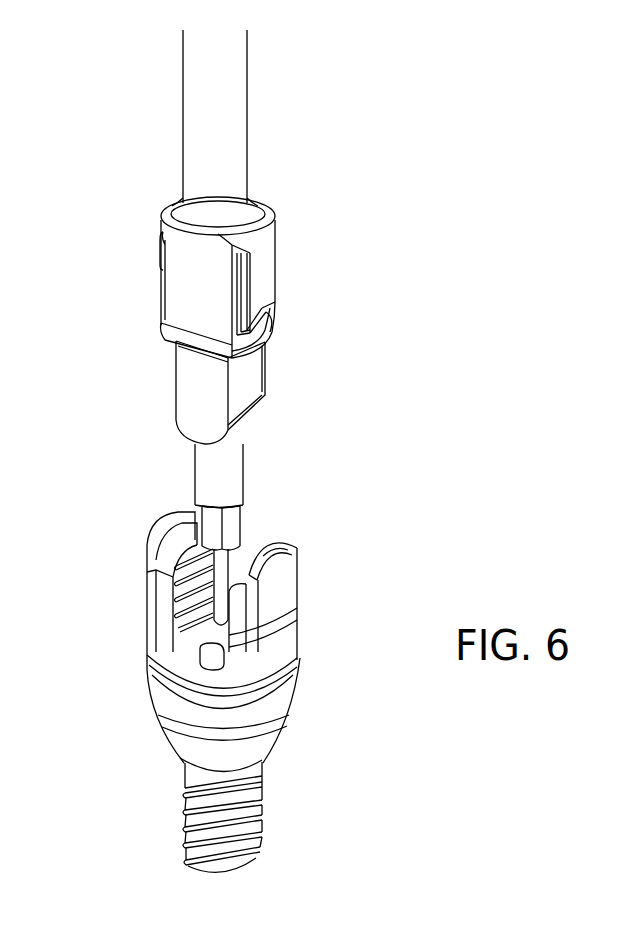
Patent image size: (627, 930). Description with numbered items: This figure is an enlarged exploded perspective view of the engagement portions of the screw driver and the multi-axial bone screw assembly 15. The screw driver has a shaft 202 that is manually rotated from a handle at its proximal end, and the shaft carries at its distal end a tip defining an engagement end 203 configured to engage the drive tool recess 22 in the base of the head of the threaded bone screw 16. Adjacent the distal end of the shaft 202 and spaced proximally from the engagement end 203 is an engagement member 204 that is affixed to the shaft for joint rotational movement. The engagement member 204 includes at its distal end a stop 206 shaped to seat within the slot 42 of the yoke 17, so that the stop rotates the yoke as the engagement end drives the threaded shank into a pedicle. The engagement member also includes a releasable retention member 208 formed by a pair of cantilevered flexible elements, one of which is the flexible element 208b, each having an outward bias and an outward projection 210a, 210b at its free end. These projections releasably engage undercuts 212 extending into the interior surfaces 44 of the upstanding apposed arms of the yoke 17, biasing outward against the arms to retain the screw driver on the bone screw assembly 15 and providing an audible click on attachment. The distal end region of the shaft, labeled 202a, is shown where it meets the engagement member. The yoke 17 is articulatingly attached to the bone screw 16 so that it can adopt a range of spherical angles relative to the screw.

The shaft 202 is at (238, 100).
The shaft distal end 202a is at (272, 317).
The engagement end 203 is at (240, 516).
The engagement member 204 is at (190, 292).
The stop 206 is at (192, 397).
The releasable retention member 208 is at (267, 290).
The flexible element 208b is at (162, 272).
The outward projection 210a is at (273, 350).
The outward projection 210b is at (163, 332).
The undercuts 212 is at (165, 511).
The slot 42 is at (240, 560).
The interior surfaces 44 is at (178, 632).
The drive tool recess 22 is at (200, 656).
The yoke 17 is at (288, 648).
The bone screw assembly 15 is at (311, 741).
The threaded bone screw 16 is at (262, 812).